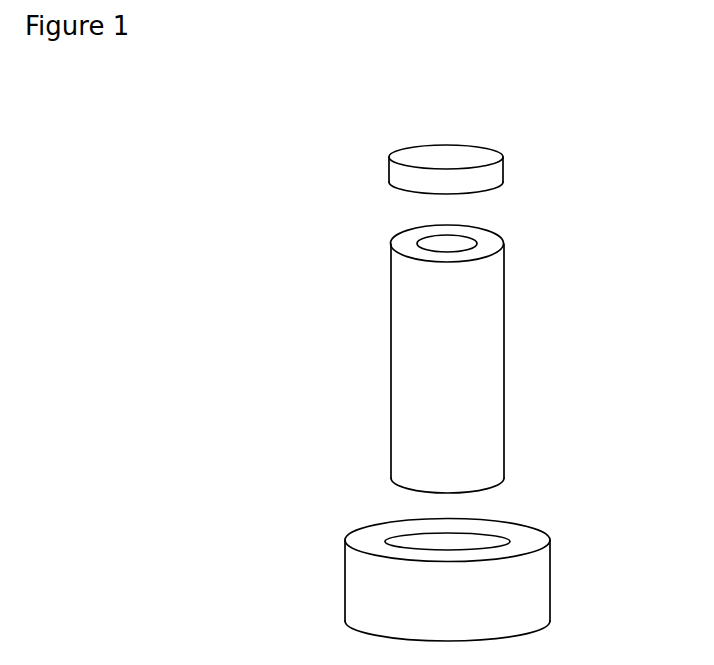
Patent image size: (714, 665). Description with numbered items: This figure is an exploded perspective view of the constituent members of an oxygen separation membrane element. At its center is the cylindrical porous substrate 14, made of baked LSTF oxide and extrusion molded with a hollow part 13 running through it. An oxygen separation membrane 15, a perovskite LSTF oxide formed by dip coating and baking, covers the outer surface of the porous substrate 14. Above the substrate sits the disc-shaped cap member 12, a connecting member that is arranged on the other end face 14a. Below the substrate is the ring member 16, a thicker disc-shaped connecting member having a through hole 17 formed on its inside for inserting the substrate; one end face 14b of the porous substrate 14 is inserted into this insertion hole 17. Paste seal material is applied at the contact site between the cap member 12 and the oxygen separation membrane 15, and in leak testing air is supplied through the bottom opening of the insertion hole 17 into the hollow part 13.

The cap member 12 is at (480, 156).
The hollow part 13 is at (432, 243).
The porous substrate 14 is at (472, 352).
The other end face 14a is at (492, 243).
The one end face 14b is at (488, 487).
The oxygen separation membrane 15 is at (505, 313).
The ring member 16 is at (497, 573).
The through hole 17 is at (490, 540).